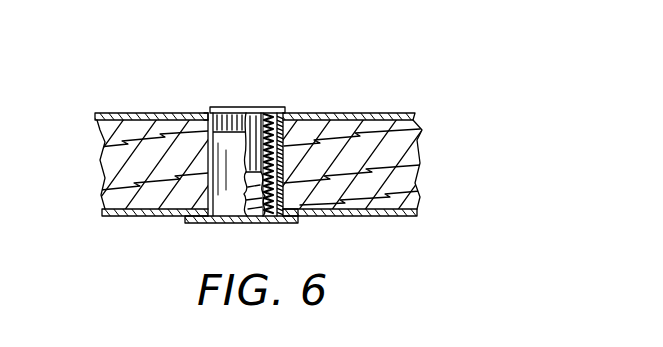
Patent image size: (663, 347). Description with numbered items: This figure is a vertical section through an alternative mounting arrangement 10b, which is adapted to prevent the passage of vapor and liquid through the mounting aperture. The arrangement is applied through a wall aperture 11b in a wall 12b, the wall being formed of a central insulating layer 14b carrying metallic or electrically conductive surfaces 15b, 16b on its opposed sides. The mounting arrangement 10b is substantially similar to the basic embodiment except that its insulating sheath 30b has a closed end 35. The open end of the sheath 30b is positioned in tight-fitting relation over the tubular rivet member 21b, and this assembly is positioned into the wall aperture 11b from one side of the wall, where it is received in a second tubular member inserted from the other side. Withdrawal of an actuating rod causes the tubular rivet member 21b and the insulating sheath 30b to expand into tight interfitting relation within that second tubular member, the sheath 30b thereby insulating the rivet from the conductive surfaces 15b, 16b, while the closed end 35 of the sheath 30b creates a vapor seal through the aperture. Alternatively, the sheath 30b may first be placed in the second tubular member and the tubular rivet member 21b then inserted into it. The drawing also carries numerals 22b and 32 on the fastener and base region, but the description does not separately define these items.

The mounting arrangement 10b is at (286, 144).
The wall aperture 11b is at (206, 117).
The wall 12b is at (286, 161).
The central insulating layer 14b is at (414, 185).
The metallic surface 15b is at (391, 114).
The metallic surface 16b is at (403, 217).
The tubular rivet member 21b is at (252, 121).
The threaded fastener 22b is at (256, 125).
The insulating sheath 30b is at (291, 136).
The base flange 32 is at (295, 223).
The closed end 35 is at (257, 224).